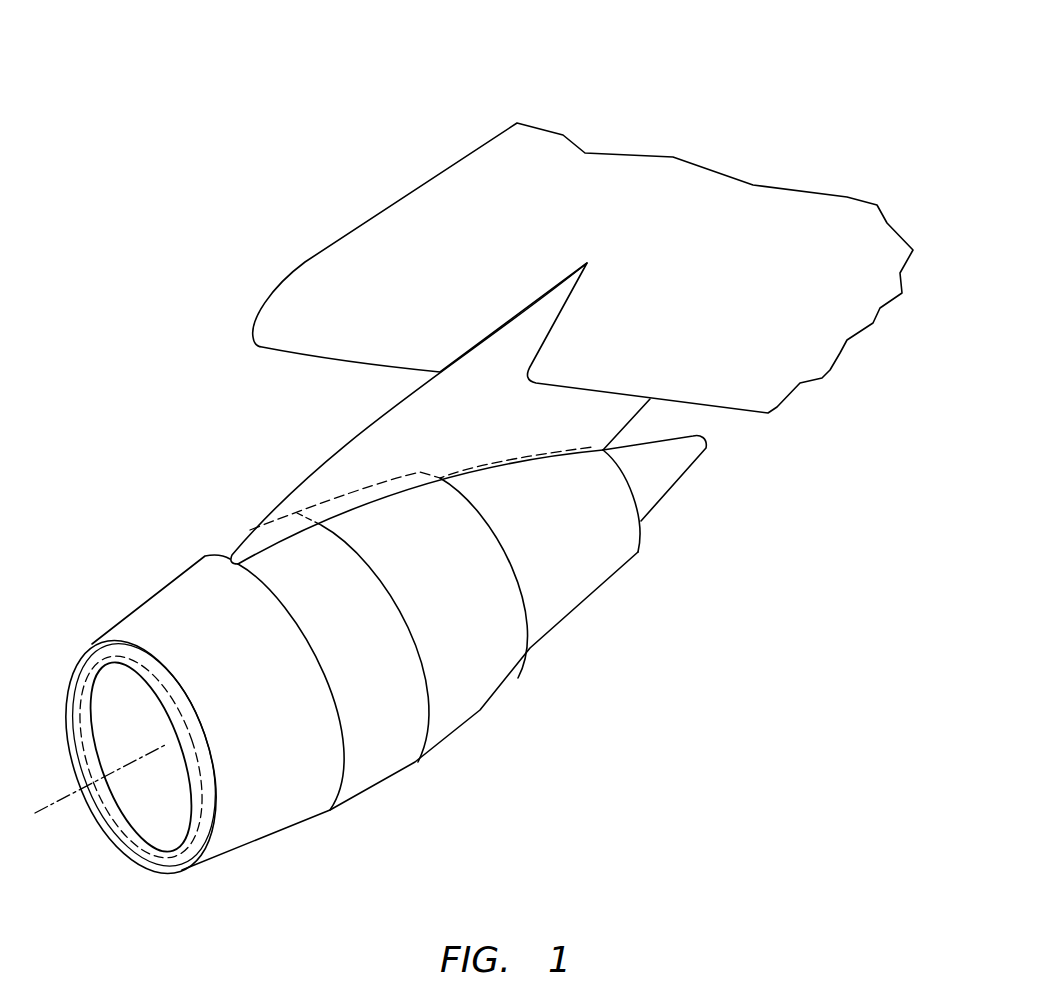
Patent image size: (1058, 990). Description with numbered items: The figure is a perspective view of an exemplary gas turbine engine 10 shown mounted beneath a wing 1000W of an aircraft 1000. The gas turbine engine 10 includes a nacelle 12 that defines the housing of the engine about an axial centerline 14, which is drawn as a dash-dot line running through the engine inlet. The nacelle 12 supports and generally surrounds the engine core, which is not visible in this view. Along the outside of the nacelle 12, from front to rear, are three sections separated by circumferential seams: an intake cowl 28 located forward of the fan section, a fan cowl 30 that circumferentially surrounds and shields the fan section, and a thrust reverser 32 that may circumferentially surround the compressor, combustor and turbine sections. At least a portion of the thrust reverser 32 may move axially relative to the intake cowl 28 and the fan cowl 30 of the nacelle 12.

The gas turbine engine 10 is at (370, 670).
The nacelle 12 is at (372, 665).
The axial centerline 14 is at (48, 806).
The intake cowl 28 is at (150, 617).
The fan cowl 30 is at (387, 758).
The thrust reverser 32 is at (477, 667).
The aircraft 1000 is at (572, 289).
The wing 1000W is at (758, 355).